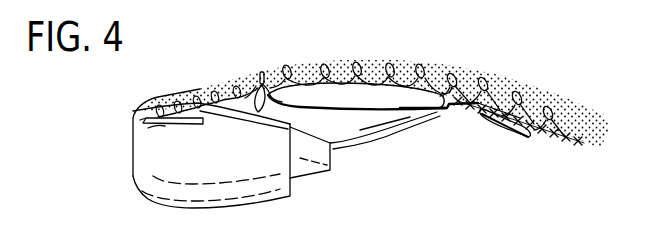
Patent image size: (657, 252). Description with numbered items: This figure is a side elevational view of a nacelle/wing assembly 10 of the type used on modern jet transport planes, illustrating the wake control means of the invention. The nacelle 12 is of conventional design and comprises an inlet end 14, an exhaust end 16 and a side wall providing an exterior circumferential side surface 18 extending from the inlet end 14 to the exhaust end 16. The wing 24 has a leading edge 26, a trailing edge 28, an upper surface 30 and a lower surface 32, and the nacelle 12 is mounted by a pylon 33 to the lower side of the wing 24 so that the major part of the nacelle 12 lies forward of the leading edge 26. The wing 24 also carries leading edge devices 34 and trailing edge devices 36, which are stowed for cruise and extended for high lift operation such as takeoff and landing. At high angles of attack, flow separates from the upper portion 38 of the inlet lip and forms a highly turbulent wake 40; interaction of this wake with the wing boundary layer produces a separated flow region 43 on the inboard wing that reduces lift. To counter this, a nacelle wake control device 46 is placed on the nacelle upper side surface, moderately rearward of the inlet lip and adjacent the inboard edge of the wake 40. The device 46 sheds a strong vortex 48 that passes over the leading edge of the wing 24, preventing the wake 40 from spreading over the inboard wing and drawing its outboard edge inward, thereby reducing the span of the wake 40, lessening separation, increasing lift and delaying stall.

The nacelle/wing assembly 10 is at (401, 48).
The nacelle 12 is at (184, 210).
The inlet end 14 is at (132, 172).
The exhaust end 16 is at (290, 180).
The exterior circumferential side surface 18 is at (168, 159).
The wing 24 is at (443, 118).
The leading edge 26 is at (288, 82).
The trailing edge 28 is at (466, 104).
The upper surface 30 is at (410, 72).
The lower surface 32 is at (407, 112).
The pylon 33 is at (362, 140).
The leading edge devices 34 is at (261, 71).
The trailing edge devices 36 is at (515, 138).
The upper portion of the inlet lip 38 is at (142, 119).
The turbulent wake 40 is at (470, 77).
The separated flow region 43 is at (578, 142).
The nacelle wake control device 46 is at (156, 134).
The vortex 48 is at (283, 68).